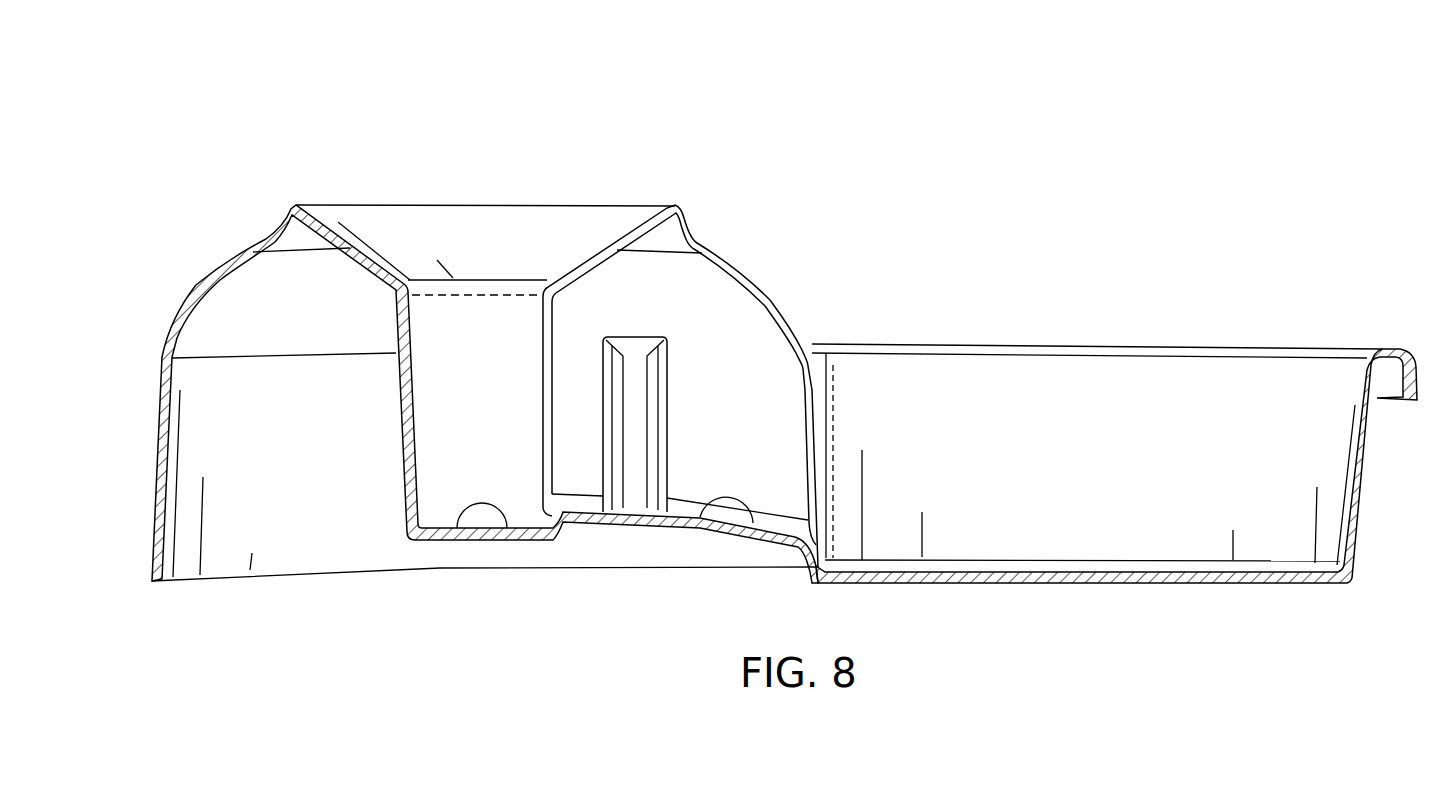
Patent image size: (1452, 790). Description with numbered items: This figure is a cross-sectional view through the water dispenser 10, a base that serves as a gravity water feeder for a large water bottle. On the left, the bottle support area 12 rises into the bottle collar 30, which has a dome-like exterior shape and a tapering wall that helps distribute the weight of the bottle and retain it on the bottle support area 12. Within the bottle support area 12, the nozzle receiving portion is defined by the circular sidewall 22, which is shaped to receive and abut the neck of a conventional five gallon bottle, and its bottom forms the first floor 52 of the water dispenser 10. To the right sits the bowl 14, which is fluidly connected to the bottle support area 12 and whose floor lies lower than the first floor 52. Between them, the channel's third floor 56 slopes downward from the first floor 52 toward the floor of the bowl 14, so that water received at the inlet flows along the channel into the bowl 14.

The water dispenser 10 is at (999, 99).
The bottle support area 12 is at (450, 230).
The bowl 14 is at (1182, 314).
The circular sidewall 22 is at (415, 394).
The bottle collar 30 is at (195, 285).
The first floor 52 is at (507, 525).
The third floor 56 is at (700, 517).